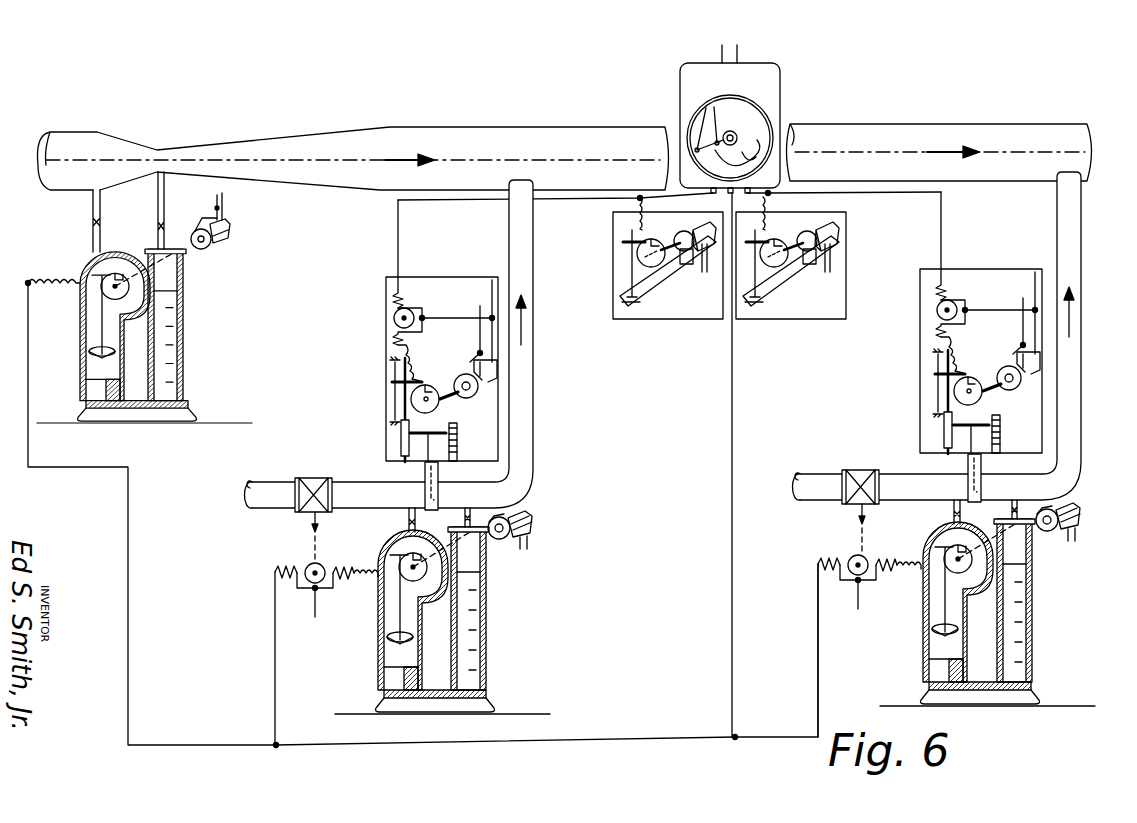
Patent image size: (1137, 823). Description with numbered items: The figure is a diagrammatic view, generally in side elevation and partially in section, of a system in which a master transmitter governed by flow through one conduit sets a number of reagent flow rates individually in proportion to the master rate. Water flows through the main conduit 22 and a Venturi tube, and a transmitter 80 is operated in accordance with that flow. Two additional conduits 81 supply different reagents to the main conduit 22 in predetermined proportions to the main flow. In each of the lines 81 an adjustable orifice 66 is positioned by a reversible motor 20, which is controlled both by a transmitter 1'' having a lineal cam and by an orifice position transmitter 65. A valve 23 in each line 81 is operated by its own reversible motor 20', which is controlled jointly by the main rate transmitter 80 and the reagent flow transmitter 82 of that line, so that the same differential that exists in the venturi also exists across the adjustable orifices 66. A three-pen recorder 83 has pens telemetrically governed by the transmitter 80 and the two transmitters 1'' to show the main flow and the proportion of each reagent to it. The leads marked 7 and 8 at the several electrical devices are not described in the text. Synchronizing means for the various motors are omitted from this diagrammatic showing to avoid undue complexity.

The main conduit 22 is at (427, 126).
The three-pen recorder 83 is at (783, 114).
The solenoid lead 7 is at (719, 51).
The solenoid lead 8 is at (741, 53).
The transmitter 1'' is at (729, 277).
The transmitter 80 is at (185, 354).
The reversible motor 20 is at (628, 286).
The orifice position transmitter 65 is at (380, 381).
The additional conduit 81 is at (545, 410).
The valve 23 is at (314, 477).
The adjustable orifice 66 is at (424, 488).
The reagent flow transmitter 82 is at (488, 603).
The reversible motor 20' is at (568, 637).